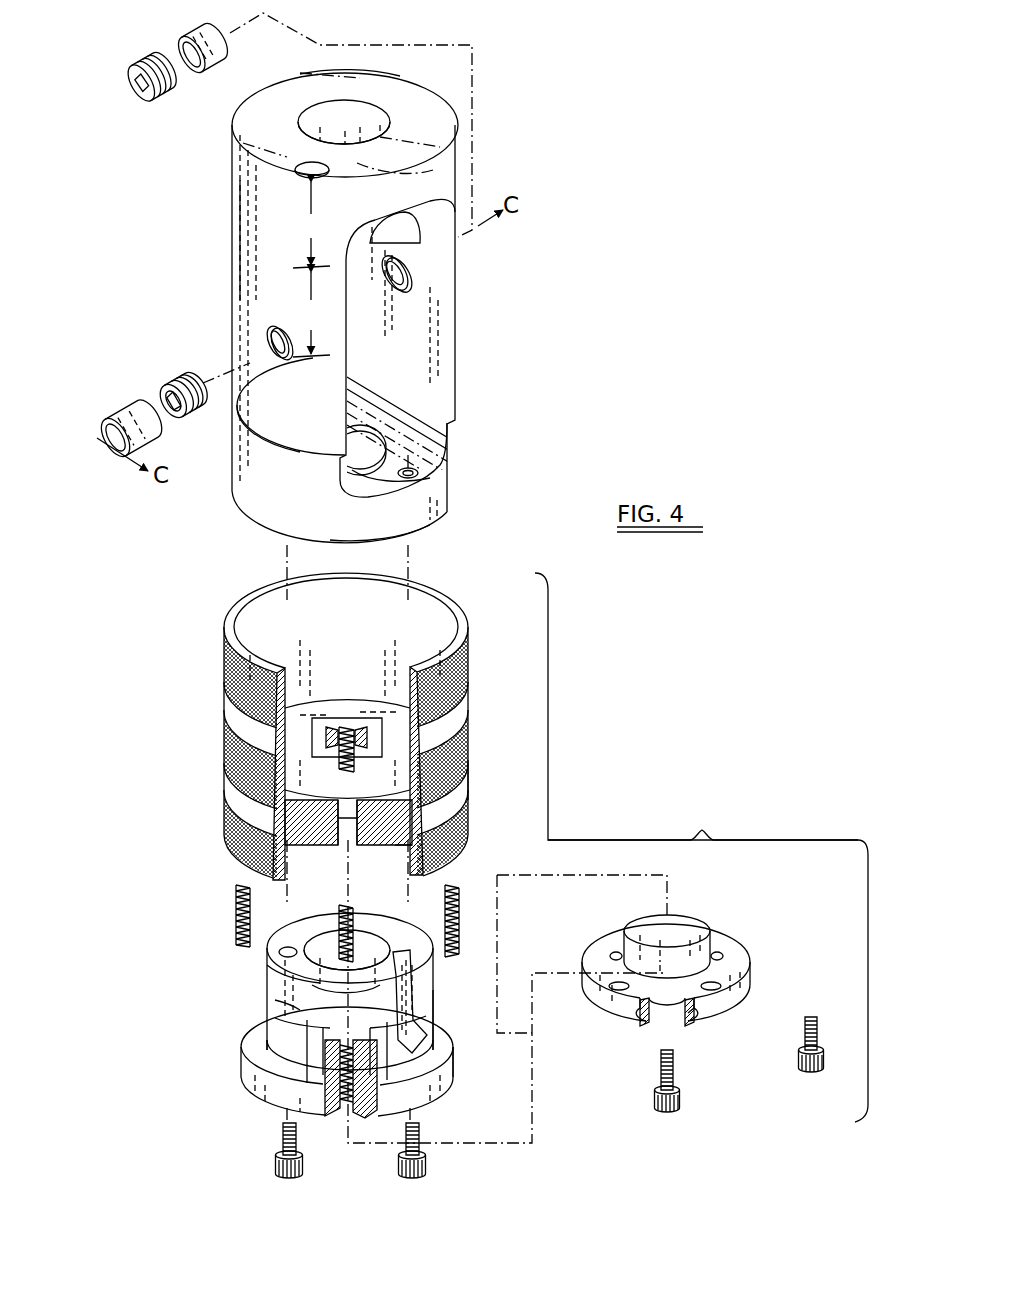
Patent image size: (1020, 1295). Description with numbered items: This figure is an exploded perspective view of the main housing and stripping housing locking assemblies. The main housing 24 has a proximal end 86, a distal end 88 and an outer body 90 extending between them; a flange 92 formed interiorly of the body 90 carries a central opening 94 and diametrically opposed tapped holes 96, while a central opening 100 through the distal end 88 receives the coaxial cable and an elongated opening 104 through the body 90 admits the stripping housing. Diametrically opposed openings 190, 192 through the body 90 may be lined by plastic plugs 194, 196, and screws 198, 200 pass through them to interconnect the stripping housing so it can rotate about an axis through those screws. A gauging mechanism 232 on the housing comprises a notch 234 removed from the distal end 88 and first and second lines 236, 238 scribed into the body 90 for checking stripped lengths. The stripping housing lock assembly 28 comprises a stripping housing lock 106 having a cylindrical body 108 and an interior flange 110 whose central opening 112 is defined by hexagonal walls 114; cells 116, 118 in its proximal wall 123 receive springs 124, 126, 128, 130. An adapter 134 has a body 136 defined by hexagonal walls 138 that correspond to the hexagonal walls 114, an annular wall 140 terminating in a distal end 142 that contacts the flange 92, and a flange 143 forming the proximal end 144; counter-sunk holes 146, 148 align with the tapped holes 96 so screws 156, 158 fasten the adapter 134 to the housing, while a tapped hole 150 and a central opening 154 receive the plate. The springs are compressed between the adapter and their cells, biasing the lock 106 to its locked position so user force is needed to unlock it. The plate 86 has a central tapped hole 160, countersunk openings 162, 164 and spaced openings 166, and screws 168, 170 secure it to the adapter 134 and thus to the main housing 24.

The main housing 24 is at (220, 242).
The stripping housing lock assembly 28 is at (703, 829).
The plate 86 is at (433, 522).
The distal end 88 is at (317, 80).
The outer body 90 is at (265, 337).
The flange 92 is at (389, 478).
The central opening 94 is at (352, 452).
The tapped hole 96 is at (415, 467).
The central opening 100 is at (345, 116).
The elongated opening 104 is at (408, 332).
The stripping housing lock 106 is at (230, 704).
The cylindrical body 108 is at (460, 781).
The flange 110 is at (310, 707).
The central opening 112 is at (323, 778).
The hexagonal walls 114 is at (385, 723).
The cell 116 is at (343, 847).
The cell 118 is at (369, 758).
The proximal wall 123 is at (401, 846).
The spring 124 is at (317, 976).
The spring 126 is at (282, 805).
The spring 128 is at (237, 888).
The spring 130 is at (443, 958).
The adapter 134 is at (250, 1007).
The body 136 is at (427, 1004).
The hexagonal walls 138 is at (303, 1004).
The annular wall 140 is at (300, 1015).
The distal end 142 is at (305, 1000).
The flange 143 is at (440, 1055).
The proximal end 144 is at (435, 1097).
The counter-sunk hole 146 is at (278, 951).
The counter-sunk hole 148 is at (407, 950).
The tapped hole 150 is at (347, 1100).
The central opening 154 is at (330, 957).
The screw 156 is at (277, 1138).
The screw 158 is at (425, 1150).
The central tapped hole 160 is at (680, 1024).
The countersunk opening 162 is at (653, 1024).
The countersunk opening 164 is at (672, 915).
The opening 166 is at (613, 950).
The screw 168 is at (673, 1108).
The screw 170 is at (800, 1057).
The opening 190 is at (266, 331).
The opening 192 is at (406, 267).
The plastic plug 194 is at (160, 410).
The plastic plug 196 is at (185, 35).
The screw 198 is at (180, 378).
The screw 200 is at (140, 98).
The gauging mechanism 232 is at (284, 229).
The notch 234 is at (306, 167).
The first line 236 is at (293, 267).
The second line 238 is at (262, 442).